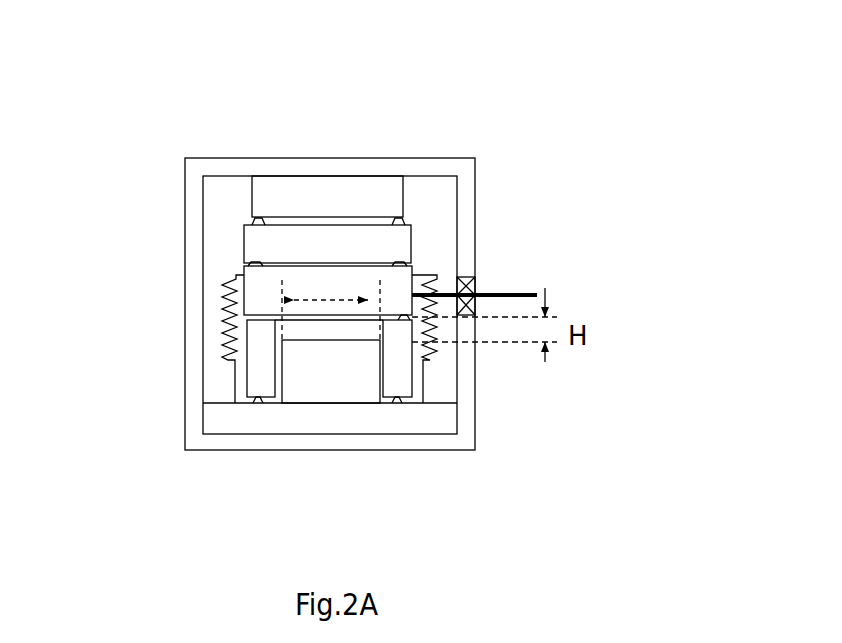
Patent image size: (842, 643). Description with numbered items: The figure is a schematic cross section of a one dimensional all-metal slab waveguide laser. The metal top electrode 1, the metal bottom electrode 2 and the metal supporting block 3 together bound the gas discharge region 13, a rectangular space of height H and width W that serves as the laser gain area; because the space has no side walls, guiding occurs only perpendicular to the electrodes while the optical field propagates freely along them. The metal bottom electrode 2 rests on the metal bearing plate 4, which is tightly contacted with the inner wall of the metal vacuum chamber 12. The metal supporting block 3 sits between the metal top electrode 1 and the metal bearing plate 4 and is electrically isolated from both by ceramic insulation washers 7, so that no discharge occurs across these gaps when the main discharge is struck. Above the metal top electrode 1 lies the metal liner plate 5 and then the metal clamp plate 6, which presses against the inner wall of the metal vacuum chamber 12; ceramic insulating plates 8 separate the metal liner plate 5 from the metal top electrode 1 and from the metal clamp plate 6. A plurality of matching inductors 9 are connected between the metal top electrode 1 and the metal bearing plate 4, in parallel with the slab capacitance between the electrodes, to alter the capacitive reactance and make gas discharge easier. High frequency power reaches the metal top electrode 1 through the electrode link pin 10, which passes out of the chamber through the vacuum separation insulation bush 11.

The metal top electrode 1 is at (262, 291).
The metal bottom electrode 2 is at (320, 385).
The metal supporting block 3 is at (255, 378).
The metal bearing plate 4 is at (220, 417).
The metal liner plate 5 is at (263, 243).
The metal clamp plate 6 is at (295, 188).
The ceramic insulation washers 7 is at (402, 319).
The ceramic insulating plates 8 is at (400, 258).
The matching inductors 9 is at (223, 313).
The electrode link pin 10 is at (512, 290).
The vacuum separation insulation bush 11 is at (462, 303).
The metal vacuum chamber 12 is at (368, 163).
The gas discharge region 13 is at (320, 327).